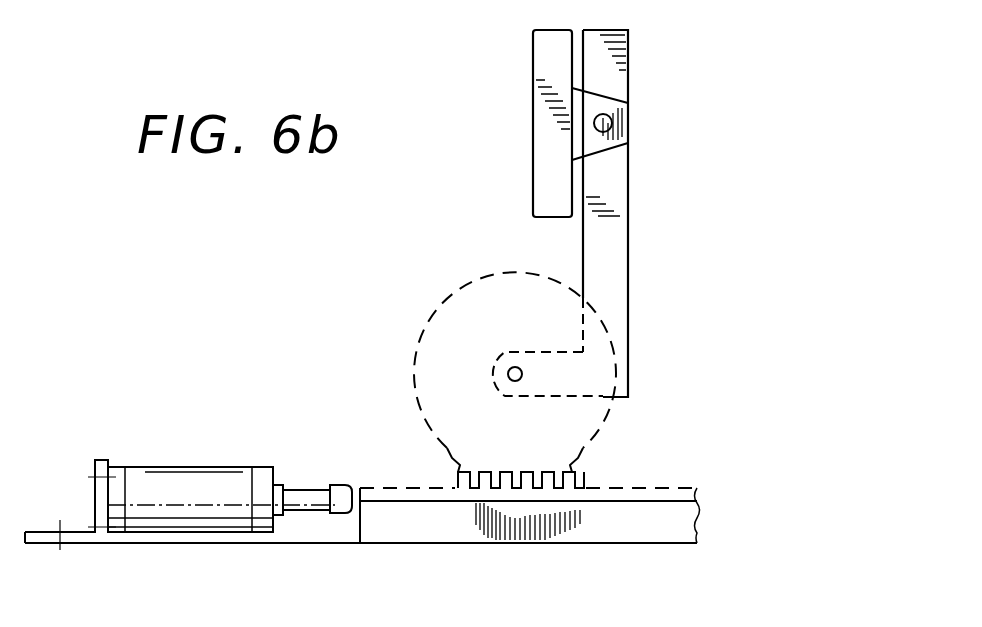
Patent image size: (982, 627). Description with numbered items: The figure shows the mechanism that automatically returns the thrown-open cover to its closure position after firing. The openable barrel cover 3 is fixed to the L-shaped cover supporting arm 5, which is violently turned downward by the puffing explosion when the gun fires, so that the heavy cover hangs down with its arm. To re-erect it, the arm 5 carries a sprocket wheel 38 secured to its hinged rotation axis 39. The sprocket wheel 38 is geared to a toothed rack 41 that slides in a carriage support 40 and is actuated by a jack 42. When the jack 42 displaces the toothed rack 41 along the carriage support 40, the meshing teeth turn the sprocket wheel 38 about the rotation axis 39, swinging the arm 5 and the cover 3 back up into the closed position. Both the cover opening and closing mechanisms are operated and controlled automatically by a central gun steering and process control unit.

The openable barrel cover 3 is at (538, 138).
The cover supporting arm 5 is at (612, 286).
The sprocket wheel 38 is at (420, 408).
The hinged rotation axis 39 is at (510, 366).
The carriage support 40 is at (440, 523).
The toothed rack 41 is at (631, 489).
The jack 42 is at (177, 485).